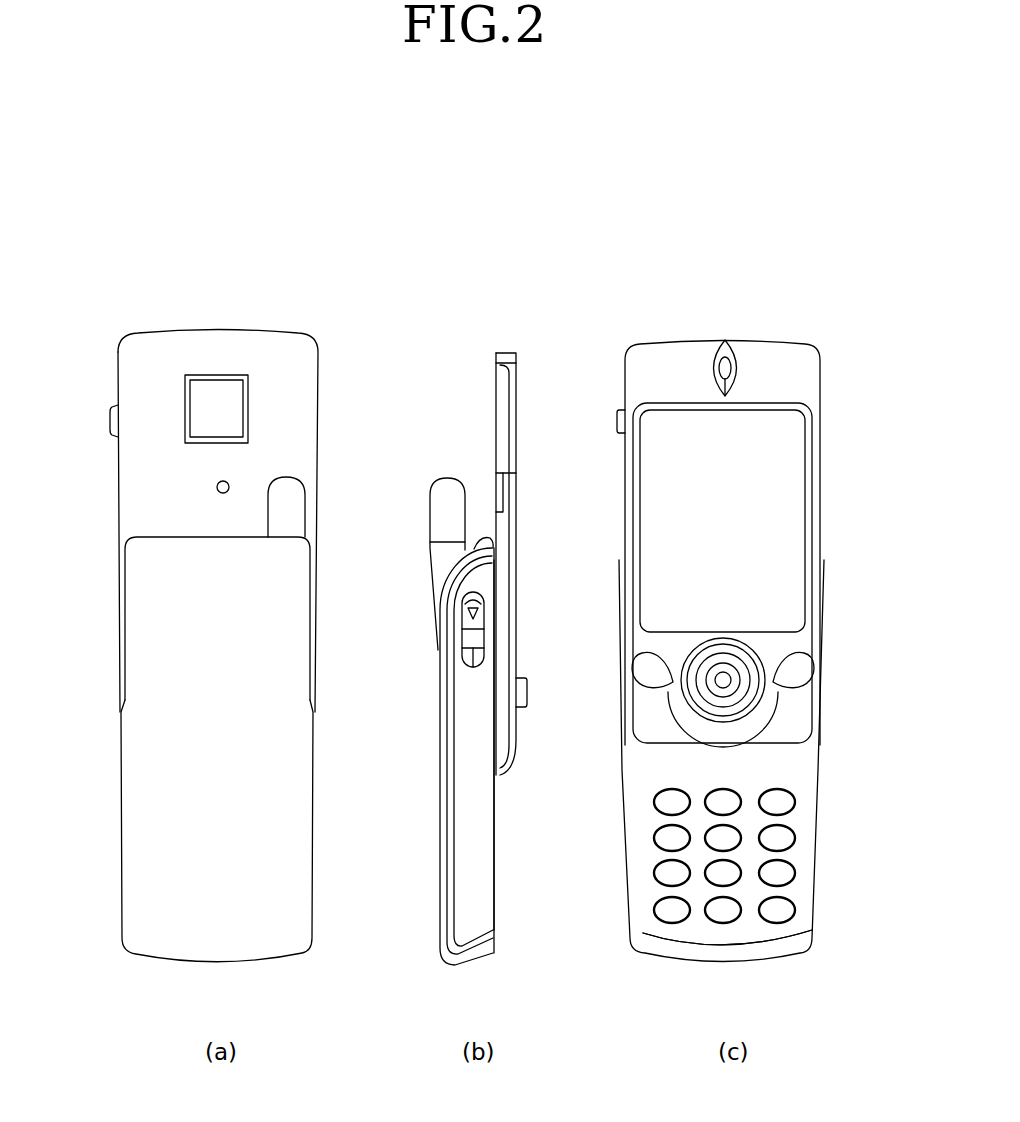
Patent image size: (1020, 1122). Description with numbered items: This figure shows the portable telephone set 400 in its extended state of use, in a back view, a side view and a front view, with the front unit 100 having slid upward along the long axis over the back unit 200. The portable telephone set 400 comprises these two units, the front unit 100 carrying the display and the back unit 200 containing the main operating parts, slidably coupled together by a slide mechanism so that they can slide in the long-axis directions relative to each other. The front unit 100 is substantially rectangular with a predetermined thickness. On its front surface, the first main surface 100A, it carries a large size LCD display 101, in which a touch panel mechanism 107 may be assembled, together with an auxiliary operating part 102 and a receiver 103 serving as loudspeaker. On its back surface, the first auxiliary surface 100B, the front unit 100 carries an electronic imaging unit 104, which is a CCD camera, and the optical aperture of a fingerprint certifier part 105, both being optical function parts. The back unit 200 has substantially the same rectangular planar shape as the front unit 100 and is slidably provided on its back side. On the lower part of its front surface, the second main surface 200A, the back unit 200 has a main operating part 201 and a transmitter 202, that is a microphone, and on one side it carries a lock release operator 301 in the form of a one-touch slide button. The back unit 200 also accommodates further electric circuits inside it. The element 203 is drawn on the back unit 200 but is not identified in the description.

The front unit 100 is at (671, 519).
The first main surface 100A is at (519, 425).
The first auxiliary surface 100B is at (150, 362).
The display 101 is at (775, 518).
The touch panel mechanism 107 is at (786, 453).
The auxiliary operating part 102 is at (755, 733).
The receiver 103 is at (716, 353).
The electronic imaging unit 104 is at (216, 488).
The fingerprint certifier part 105 is at (207, 417).
The back unit 200 is at (134, 956).
The second main surface 200A is at (496, 914).
The main operating part 201 is at (653, 789).
The transmitter 202 is at (723, 947).
The antenna 203 is at (442, 478).
The lock release operator 301 is at (468, 637).
The portable telephone set 400 is at (397, 351).